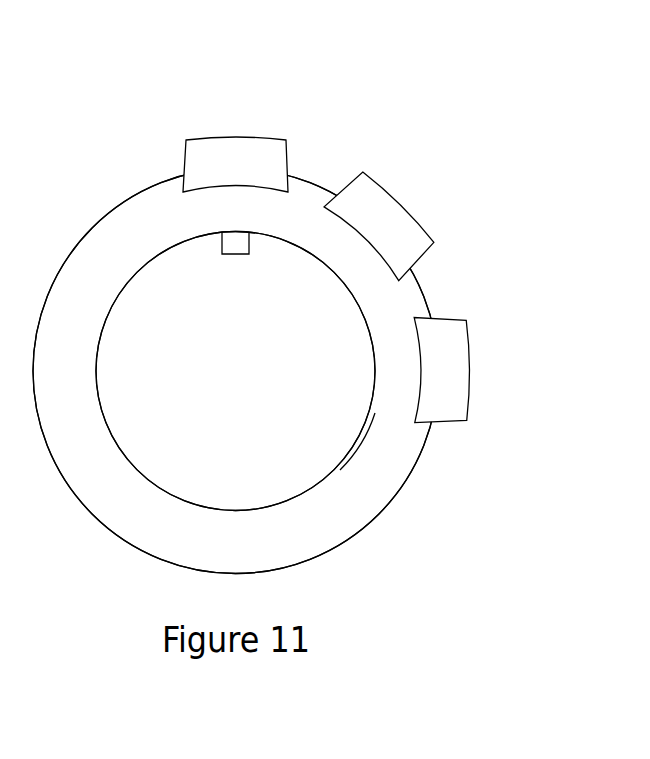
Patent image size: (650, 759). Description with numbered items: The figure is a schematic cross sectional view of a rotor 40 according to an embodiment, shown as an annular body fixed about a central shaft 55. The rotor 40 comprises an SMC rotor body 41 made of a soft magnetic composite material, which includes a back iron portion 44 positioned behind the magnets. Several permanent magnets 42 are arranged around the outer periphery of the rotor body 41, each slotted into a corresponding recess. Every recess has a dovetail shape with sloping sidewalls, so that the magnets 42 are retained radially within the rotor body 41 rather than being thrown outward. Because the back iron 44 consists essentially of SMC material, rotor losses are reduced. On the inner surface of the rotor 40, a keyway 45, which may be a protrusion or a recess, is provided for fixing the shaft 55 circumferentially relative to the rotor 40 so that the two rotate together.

The rotor 40 is at (471, 220).
The SMC rotor body 41 is at (346, 498).
The permanent magnets 42 is at (258, 137).
The back iron 44 is at (383, 420).
The keyway 45 is at (222, 242).
The shaft 55 is at (249, 384).